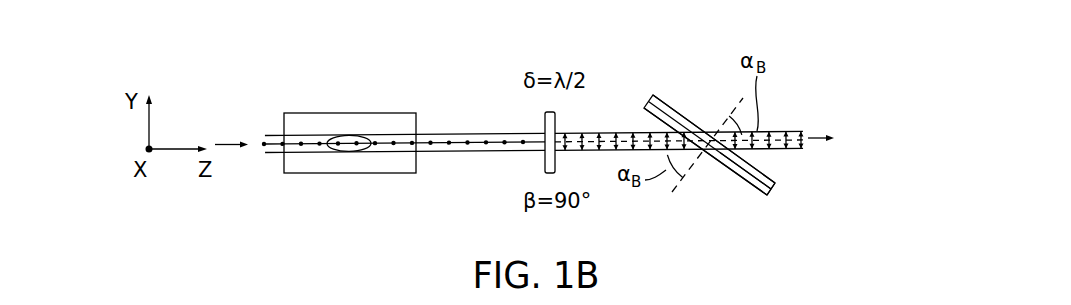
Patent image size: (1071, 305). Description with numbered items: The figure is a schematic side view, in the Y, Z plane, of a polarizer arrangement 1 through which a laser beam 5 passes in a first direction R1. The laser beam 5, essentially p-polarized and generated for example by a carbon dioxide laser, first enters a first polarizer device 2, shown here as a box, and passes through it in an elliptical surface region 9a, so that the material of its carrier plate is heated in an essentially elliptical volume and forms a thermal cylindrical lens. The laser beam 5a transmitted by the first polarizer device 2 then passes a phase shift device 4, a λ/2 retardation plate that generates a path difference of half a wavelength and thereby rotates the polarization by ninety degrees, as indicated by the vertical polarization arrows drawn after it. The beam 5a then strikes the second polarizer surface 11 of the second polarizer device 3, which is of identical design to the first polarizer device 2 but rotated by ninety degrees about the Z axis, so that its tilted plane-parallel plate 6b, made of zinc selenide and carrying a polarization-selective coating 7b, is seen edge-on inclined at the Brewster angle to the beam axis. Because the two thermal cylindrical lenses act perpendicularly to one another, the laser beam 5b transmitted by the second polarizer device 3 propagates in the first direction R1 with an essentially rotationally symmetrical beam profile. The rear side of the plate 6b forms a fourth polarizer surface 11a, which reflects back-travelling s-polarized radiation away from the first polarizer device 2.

The polarizer arrangement 1 is at (853, 64).
The first polarizer device 2 is at (343, 99).
The second polarizer device 3 is at (691, 88).
The phase shift device 4 is at (545, 121).
The laser beam 5 is at (278, 134).
The transmitted laser beam 5a is at (463, 136).
The laser beam transmitted by the second polarizer device 5b is at (780, 129).
The plane-parallel plate 6b is at (771, 178).
The polarization-selective coating 7b is at (740, 168).
The elliptical surface region 9a is at (363, 135).
The second polarizer surface 11 is at (655, 119).
The fourth polarizer surface 11a is at (667, 101).
The first direction R1 is at (227, 141).